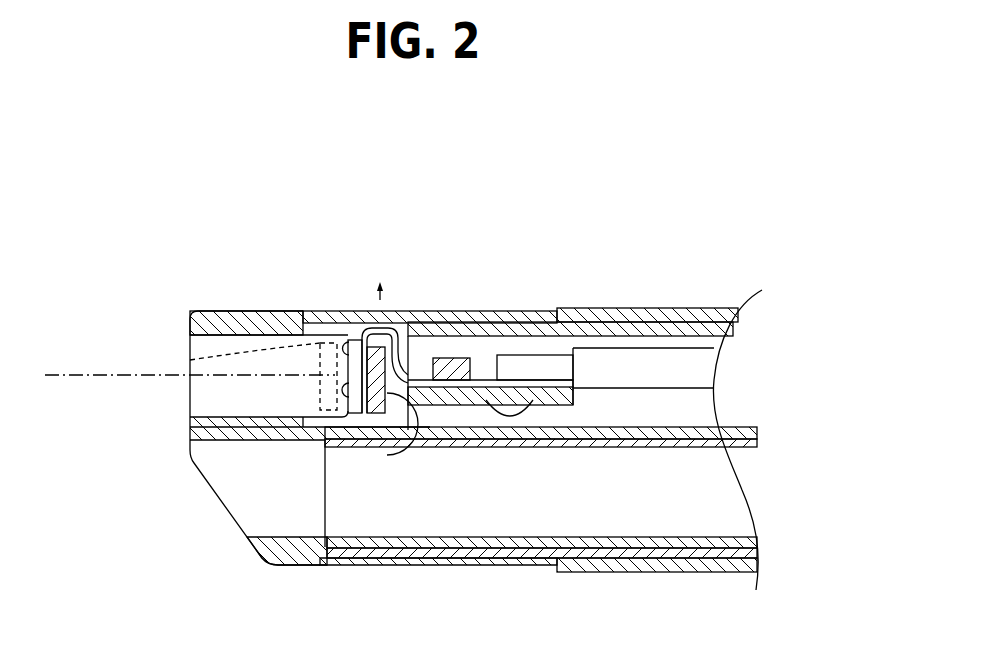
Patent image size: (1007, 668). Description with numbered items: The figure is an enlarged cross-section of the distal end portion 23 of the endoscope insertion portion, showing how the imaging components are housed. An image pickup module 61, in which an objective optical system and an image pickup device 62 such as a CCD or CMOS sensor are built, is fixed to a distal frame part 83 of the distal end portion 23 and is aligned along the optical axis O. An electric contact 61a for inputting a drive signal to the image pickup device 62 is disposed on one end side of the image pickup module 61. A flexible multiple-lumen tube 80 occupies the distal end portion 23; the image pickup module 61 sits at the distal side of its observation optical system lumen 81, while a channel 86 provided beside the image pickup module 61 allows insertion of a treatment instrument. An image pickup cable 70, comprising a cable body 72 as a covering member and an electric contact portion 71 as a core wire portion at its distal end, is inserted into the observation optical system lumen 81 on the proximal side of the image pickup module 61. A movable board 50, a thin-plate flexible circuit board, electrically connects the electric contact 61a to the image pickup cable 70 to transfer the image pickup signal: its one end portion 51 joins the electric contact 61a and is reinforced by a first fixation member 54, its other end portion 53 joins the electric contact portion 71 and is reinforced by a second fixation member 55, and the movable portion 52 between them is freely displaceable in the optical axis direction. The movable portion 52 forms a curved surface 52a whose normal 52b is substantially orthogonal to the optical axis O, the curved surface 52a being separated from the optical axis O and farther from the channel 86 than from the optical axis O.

The distal end portion 23 is at (150, 182).
The optical axis O is at (63, 376).
The movable board 50 is at (483, 191).
The one end portion 51 is at (348, 345).
The movable portion 52 is at (395, 337).
The curved surface 52a is at (367, 330).
The normal 52b is at (380, 326).
The other end portion 53 is at (483, 398).
The first fixation member 54 is at (393, 440).
The second fixation member 55 is at (455, 405).
The image pickup module 61 is at (270, 316).
The electric contact 61a is at (344, 350).
The image pickup device 62 is at (190, 356).
The image pickup cable 70 is at (653, 255).
The electric contact portion 71 is at (538, 356).
The cable body 72 is at (623, 349).
The multiple-lumen tube 80 is at (802, 243).
The observation optical system lumen 81 is at (713, 327).
The distal frame part 83 is at (207, 316).
The channel 86 is at (703, 493).